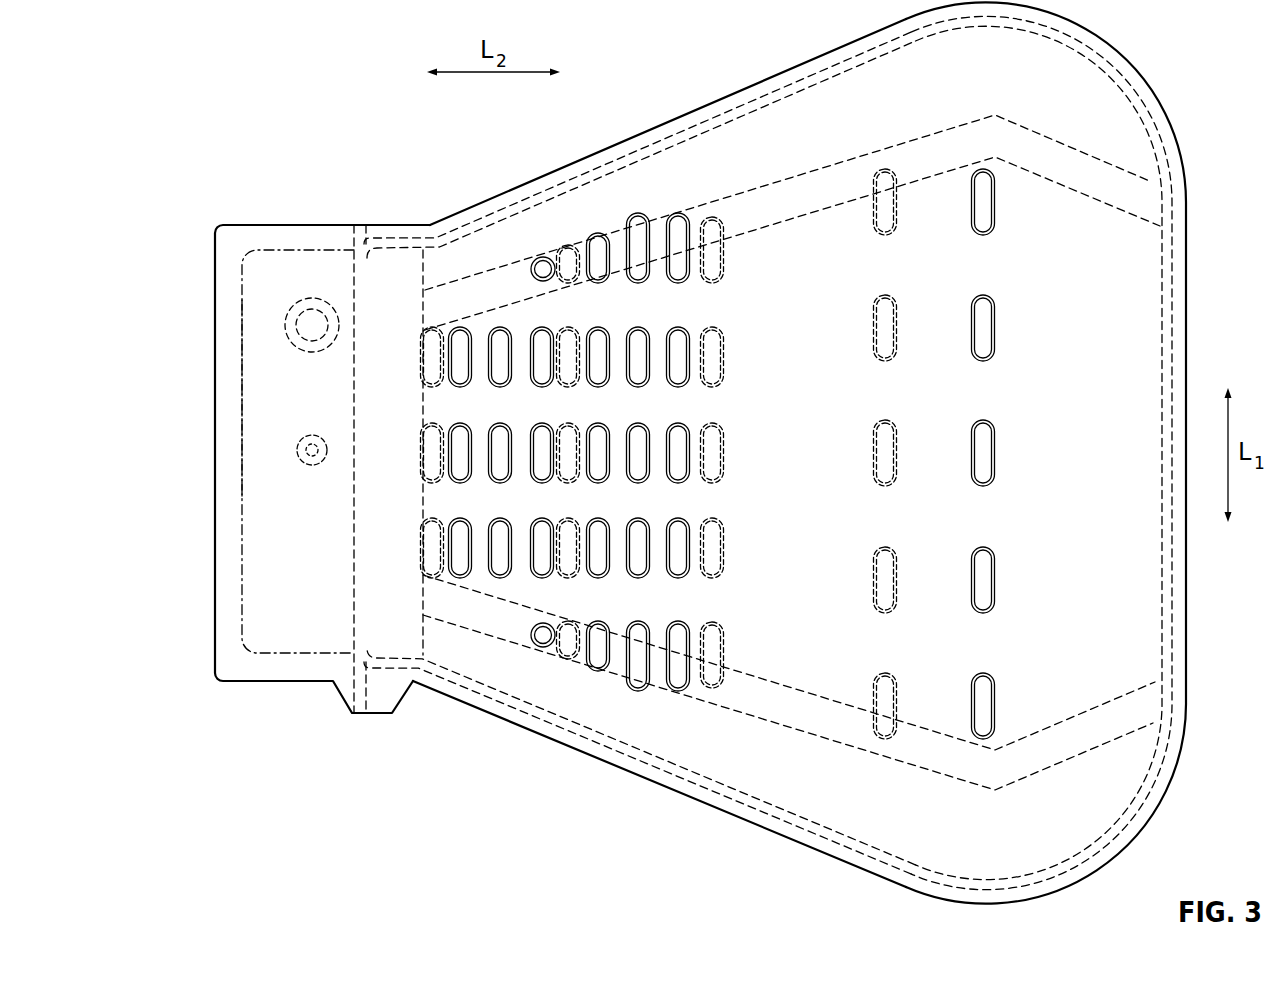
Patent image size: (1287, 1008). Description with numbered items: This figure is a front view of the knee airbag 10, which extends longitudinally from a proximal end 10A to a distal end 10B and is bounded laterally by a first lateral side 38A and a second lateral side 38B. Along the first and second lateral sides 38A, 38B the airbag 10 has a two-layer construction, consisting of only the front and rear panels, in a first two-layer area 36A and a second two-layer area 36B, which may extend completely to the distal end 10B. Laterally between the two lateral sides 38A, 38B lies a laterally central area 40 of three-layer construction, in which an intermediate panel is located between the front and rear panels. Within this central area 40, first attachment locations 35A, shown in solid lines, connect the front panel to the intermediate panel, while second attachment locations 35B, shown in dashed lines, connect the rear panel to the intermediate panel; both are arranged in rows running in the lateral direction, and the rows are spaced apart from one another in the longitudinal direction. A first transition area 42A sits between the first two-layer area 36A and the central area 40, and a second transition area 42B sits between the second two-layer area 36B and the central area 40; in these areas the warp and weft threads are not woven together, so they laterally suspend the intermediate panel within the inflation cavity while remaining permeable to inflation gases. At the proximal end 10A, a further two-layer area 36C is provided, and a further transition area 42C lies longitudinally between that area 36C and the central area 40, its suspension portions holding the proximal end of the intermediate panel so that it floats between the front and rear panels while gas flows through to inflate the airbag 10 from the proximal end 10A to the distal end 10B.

The knee airbag 10 is at (247, 185).
The proximal end 10A is at (215, 452).
The distal end 10B is at (1187, 272).
The first attachment locations 35A is at (995, 212).
The second attachment locations 35B is at (868, 220).
The first two-layer area 36A is at (845, 128).
The second two-layer area 36B is at (833, 789).
The further two-layer area 36C is at (325, 409).
The first lateral side 38A is at (815, 52).
The second lateral side 38B is at (775, 842).
The laterally central area 40 is at (791, 474).
The first transition area 42A is at (797, 215).
The second transition area 42B is at (783, 709).
The further transition area 42C is at (417, 437).